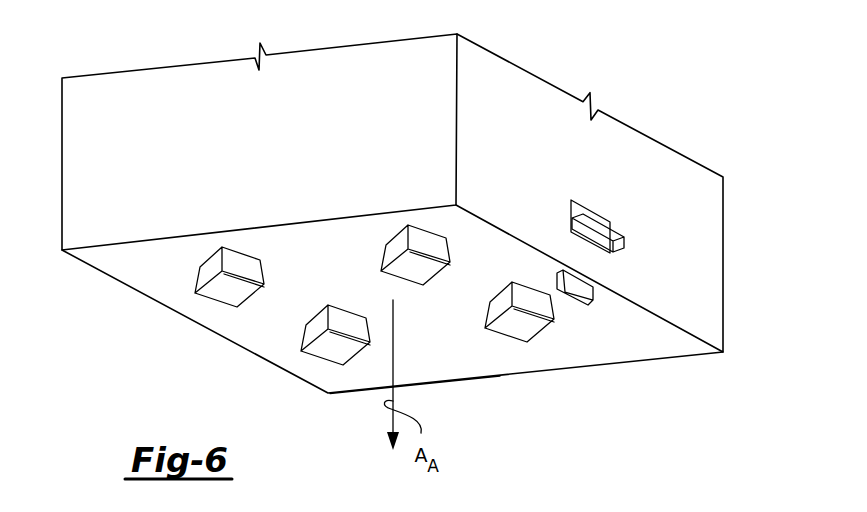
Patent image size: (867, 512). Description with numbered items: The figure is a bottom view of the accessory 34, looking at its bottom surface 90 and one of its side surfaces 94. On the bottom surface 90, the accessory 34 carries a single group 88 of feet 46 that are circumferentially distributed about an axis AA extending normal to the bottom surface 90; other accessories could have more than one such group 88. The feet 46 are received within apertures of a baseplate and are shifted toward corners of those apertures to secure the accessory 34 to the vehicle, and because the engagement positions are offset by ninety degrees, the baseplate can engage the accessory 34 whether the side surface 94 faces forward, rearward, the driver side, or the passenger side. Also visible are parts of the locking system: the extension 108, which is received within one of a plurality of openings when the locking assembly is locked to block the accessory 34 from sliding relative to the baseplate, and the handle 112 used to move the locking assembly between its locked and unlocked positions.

The accessory 34 is at (393, 226).
The feet 46 is at (232, 293).
The group of feet 88 is at (476, 399).
The bottom surface 90 is at (665, 342).
The side surface 94 is at (242, 156).
The extension 108 is at (583, 292).
The handle 112 is at (617, 232).